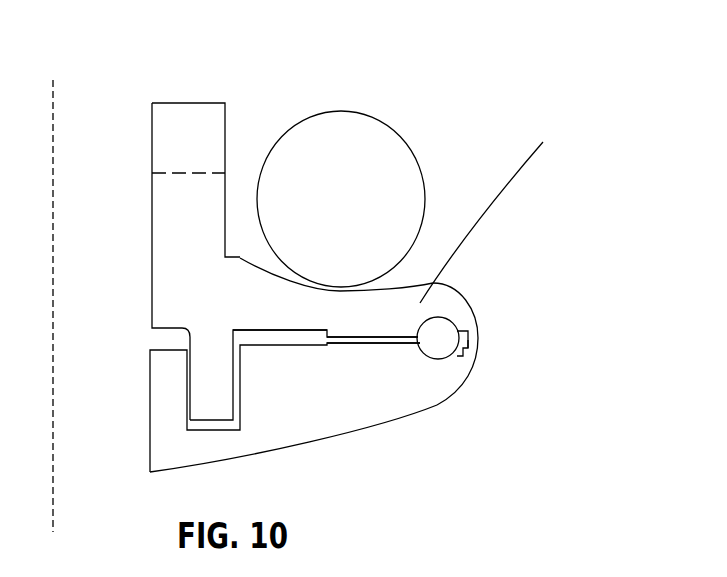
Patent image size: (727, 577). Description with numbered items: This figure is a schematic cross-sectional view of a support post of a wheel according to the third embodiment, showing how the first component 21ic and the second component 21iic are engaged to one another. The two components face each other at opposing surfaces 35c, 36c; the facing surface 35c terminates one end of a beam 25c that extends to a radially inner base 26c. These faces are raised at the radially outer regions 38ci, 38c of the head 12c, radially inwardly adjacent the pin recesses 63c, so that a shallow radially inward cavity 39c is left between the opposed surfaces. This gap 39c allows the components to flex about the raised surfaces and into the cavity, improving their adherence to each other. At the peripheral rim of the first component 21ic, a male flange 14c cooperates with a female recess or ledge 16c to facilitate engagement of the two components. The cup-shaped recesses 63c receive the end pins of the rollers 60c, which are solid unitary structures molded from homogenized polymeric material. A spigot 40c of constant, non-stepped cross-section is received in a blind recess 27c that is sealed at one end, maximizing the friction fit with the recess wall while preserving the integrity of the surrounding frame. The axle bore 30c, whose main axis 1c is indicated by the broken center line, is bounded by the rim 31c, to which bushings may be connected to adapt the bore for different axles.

The main axis 1c is at (55, 508).
The axle bore 30c is at (92, 112).
The rim 31c is at (173, 127).
The beam 25c is at (177, 212).
The radially inner base 26c is at (175, 277).
The spigot 40c is at (203, 391).
The recess 27c is at (193, 433).
The opposing surface 36c is at (262, 365).
The roller 60c is at (373, 207).
The first component 21ic is at (427, 382).
The second component 21iic is at (512, 200).
The male flange 14c is at (480, 328).
The radially outer region 38c is at (383, 337).
The pin recess 63c is at (441, 338).
The head 12c is at (500, 315).
The female recess or ledge 16c is at (500, 346).
The facing surface 35c is at (338, 316).
The cavity 39c is at (299, 365).
The radially outer region 38ci is at (395, 345).